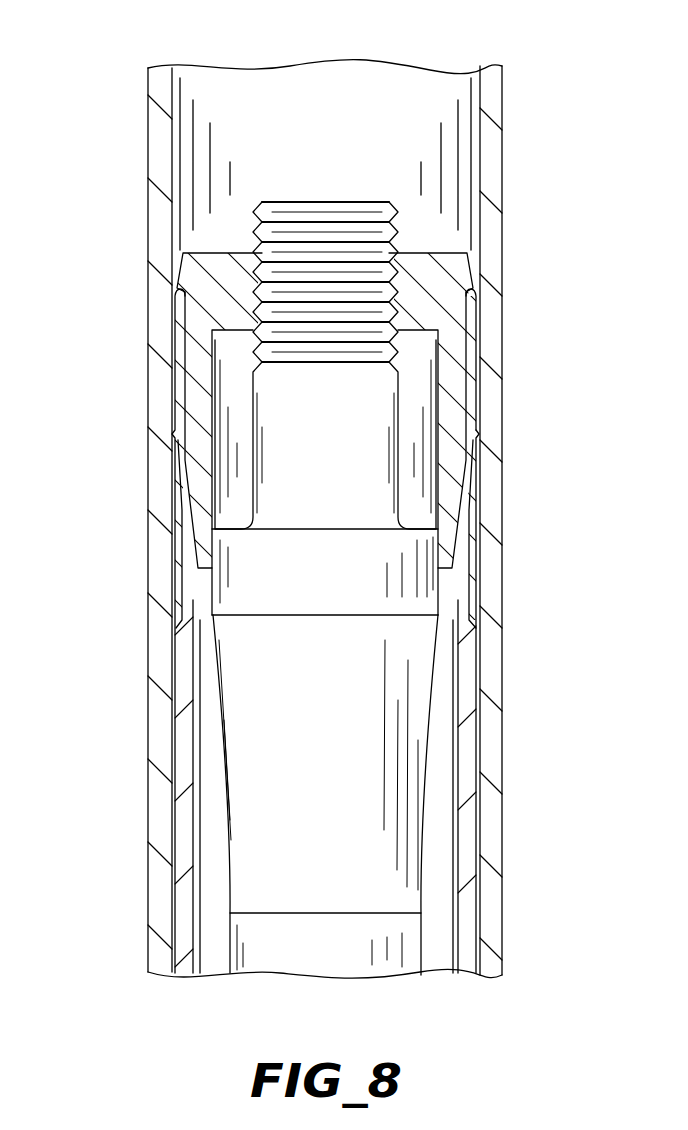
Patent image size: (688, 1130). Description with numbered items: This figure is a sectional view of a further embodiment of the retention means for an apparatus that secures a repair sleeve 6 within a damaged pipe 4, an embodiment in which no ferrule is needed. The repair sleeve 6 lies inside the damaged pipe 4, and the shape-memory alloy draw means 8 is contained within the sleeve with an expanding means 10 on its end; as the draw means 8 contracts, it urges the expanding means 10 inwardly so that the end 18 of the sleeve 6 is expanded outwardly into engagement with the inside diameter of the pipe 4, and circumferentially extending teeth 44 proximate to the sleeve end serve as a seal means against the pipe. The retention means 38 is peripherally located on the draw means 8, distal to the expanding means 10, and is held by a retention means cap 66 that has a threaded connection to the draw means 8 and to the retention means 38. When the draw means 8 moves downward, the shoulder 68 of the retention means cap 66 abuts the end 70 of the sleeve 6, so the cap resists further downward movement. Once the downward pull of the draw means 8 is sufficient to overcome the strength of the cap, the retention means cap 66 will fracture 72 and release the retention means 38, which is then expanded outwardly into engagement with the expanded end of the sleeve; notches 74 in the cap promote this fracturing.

The damaged pipe 4 is at (490, 772).
The repair sleeve 6 is at (182, 763).
The draw means 8 is at (380, 953).
The expanding means 10 is at (305, 836).
The end of the sleeve 18 is at (478, 455).
The retention means 38 is at (200, 457).
The circumferentially extending teeth 44 is at (471, 446).
The retention means cap 66 is at (200, 253).
The shoulder 68 is at (175, 300).
The end of the sleeve 70 is at (474, 282).
The fracture 72 is at (220, 300).
The notches 74 is at (433, 253).